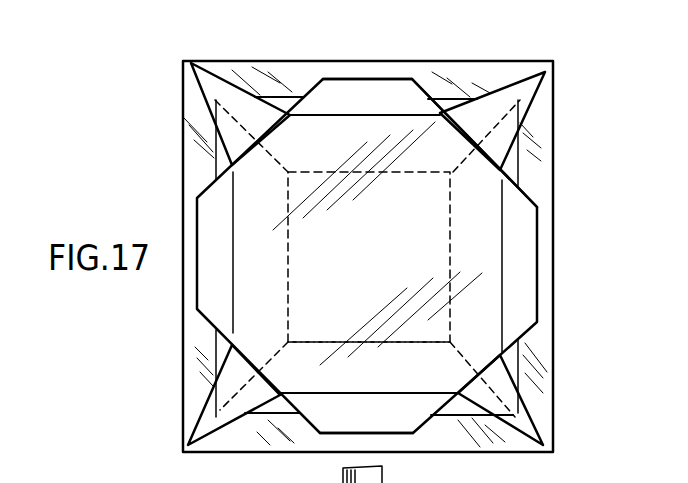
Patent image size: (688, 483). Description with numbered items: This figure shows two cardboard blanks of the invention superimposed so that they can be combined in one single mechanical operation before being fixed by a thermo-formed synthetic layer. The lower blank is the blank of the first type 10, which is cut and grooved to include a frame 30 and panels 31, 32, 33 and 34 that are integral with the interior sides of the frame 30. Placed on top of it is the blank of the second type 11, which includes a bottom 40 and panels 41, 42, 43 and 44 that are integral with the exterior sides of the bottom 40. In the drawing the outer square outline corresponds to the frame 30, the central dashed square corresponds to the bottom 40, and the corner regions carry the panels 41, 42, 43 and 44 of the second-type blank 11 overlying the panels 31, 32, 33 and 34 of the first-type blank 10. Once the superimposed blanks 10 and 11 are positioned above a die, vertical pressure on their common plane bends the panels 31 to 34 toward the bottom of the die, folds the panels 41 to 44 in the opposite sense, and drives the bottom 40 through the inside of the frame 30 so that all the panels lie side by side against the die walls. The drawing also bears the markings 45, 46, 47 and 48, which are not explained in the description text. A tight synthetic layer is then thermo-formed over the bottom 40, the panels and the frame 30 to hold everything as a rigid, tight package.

The blank of the first type 10 is at (445, 61).
The blank of the second type 11 is at (517, 188).
The frame 30 is at (505, 61).
The panel 31 is at (245, 273).
The panel 32 is at (323, 163).
The panel 33 is at (467, 261).
The panel 34 is at (362, 415).
The bottom 40 is at (337, 327).
The panel 41 is at (238, 125).
The panel 42 is at (515, 104).
The panel 43 is at (505, 390).
The panel 44 is at (240, 402).
The side facet 45 is at (212, 270).
The top facet 46 is at (375, 102).
The side facet 47 is at (513, 298).
The bottom table edge 48 is at (439, 387).